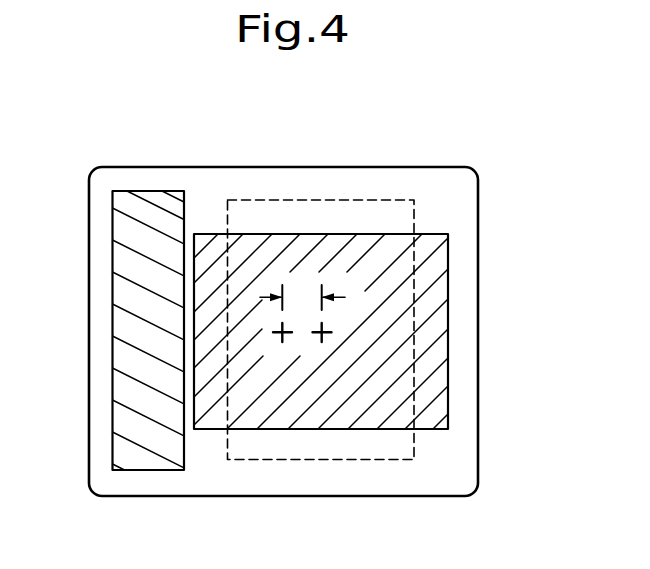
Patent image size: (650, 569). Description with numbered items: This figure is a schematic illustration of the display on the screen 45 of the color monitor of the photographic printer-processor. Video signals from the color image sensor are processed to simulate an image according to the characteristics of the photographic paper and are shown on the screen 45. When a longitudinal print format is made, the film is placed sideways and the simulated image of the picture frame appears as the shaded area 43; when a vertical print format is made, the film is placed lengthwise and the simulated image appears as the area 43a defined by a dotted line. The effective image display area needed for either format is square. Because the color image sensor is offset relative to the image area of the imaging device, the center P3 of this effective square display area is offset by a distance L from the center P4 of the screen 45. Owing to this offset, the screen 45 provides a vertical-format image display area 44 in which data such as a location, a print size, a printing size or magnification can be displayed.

The simulated image 43 is at (447, 373).
The area defined by a dotted line 43a is at (390, 198).
The image display area 44 is at (117, 375).
The screen 45 is at (217, 177).
The center of the effective square image display area P3 is at (322, 340).
The center of the screen P4 is at (282, 340).
The distance L is at (302, 298).